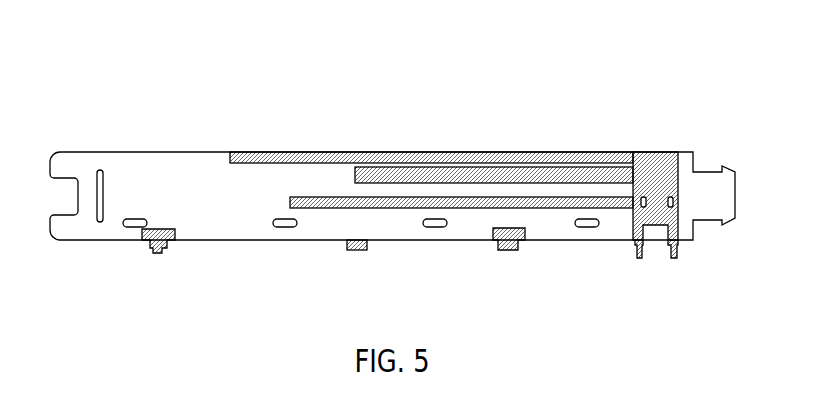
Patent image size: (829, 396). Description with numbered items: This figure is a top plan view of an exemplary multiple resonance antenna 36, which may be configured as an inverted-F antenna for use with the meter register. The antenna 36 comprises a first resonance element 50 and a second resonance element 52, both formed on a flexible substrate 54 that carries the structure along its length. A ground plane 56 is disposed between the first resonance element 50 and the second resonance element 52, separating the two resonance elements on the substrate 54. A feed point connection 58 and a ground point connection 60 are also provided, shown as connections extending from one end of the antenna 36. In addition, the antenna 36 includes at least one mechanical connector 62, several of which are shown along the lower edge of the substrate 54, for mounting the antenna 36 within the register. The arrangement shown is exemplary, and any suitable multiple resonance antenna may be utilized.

The multiple resonance antenna 36 is at (616, 87).
The first resonance element 50 is at (297, 152).
The second resonance element 52 is at (333, 208).
The flexible substrate 54 is at (240, 214).
The ground plane 56 is at (515, 177).
The feed point connection 58 is at (673, 258).
The ground point connection 60 is at (640, 258).
The mechanical connector 62 is at (157, 255).